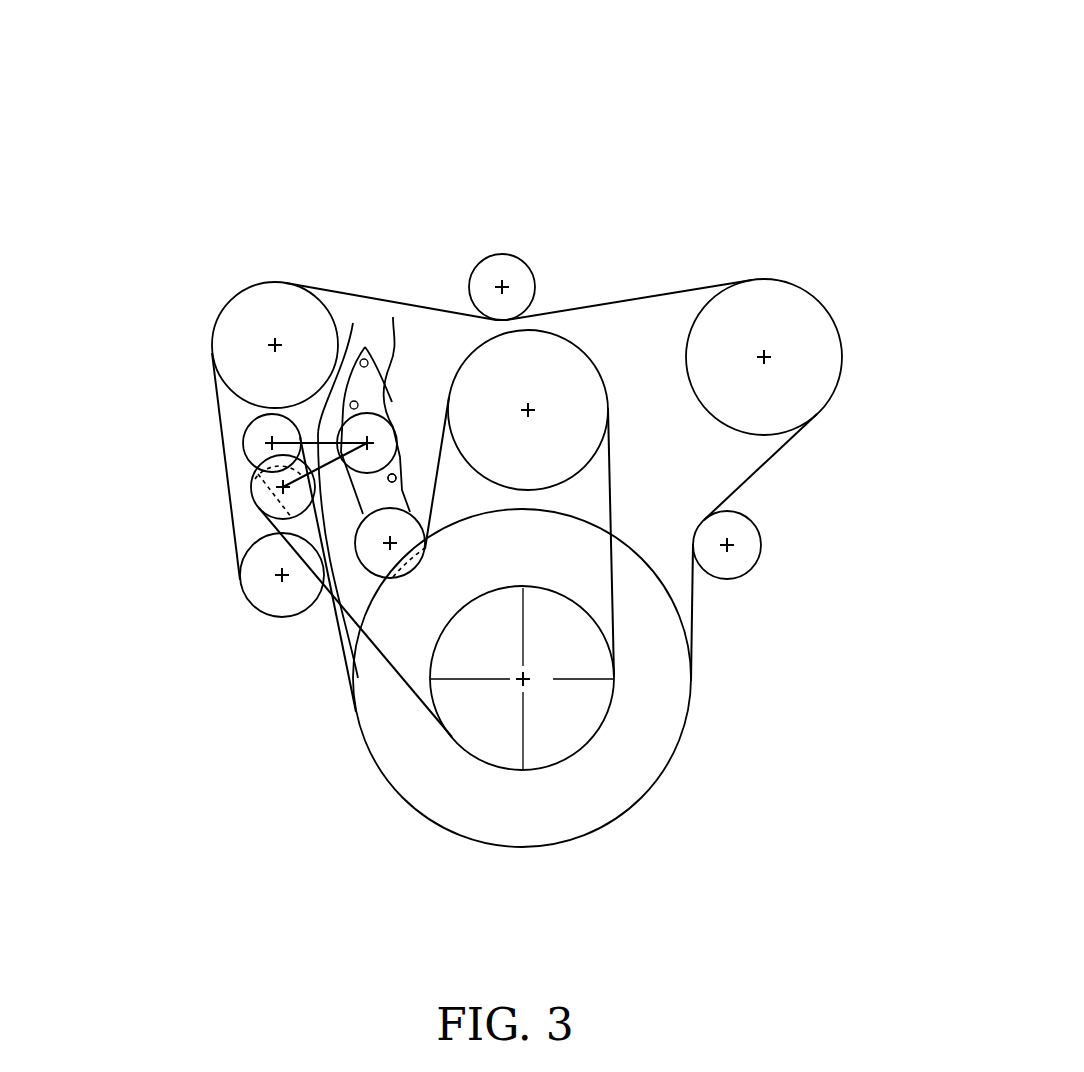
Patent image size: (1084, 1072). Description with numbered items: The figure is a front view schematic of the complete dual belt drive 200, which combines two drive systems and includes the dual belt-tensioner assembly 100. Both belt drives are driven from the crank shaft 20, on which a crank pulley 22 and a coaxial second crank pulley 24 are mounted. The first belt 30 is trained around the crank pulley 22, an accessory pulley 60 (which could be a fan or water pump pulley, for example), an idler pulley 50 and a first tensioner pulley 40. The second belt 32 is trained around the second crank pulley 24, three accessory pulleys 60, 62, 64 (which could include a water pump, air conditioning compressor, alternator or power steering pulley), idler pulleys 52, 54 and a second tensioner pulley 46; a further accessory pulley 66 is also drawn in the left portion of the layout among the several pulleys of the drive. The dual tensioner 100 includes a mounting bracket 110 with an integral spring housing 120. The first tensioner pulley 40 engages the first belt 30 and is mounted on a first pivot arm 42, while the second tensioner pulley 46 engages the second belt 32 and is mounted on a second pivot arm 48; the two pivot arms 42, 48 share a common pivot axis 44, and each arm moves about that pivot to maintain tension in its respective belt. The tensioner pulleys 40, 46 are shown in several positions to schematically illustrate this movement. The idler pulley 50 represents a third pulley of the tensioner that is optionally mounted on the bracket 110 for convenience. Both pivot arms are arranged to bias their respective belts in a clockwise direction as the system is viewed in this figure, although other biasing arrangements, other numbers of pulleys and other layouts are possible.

The dual belt drive 200 is at (632, 108).
The dual belt-tensioner assembly 100 is at (188, 488).
The crank shaft 20 is at (523, 683).
The crank pulley 22 is at (567, 733).
The second crank pulley 24 is at (600, 793).
The first belt 30 is at (612, 500).
The second belt 32 is at (645, 294).
The first tensioner pulley 40 is at (256, 511).
The first pivot arm 42 is at (365, 557).
The pivot axis 44 is at (368, 385).
The second tensioner pulley 46 is at (243, 443).
The second pivot arm 48 is at (353, 323).
The idler pulley 50 is at (378, 560).
The idler pulley 52 is at (510, 268).
The idler pulley 54 is at (747, 548).
The accessory pulley 60 is at (578, 402).
The accessory pulley 62 is at (812, 345).
The accessory pulley 64 is at (248, 318).
The accessory pulley 66 is at (263, 593).
The mounting bracket 110 is at (393, 317).
The spring housing 120 is at (377, 453).